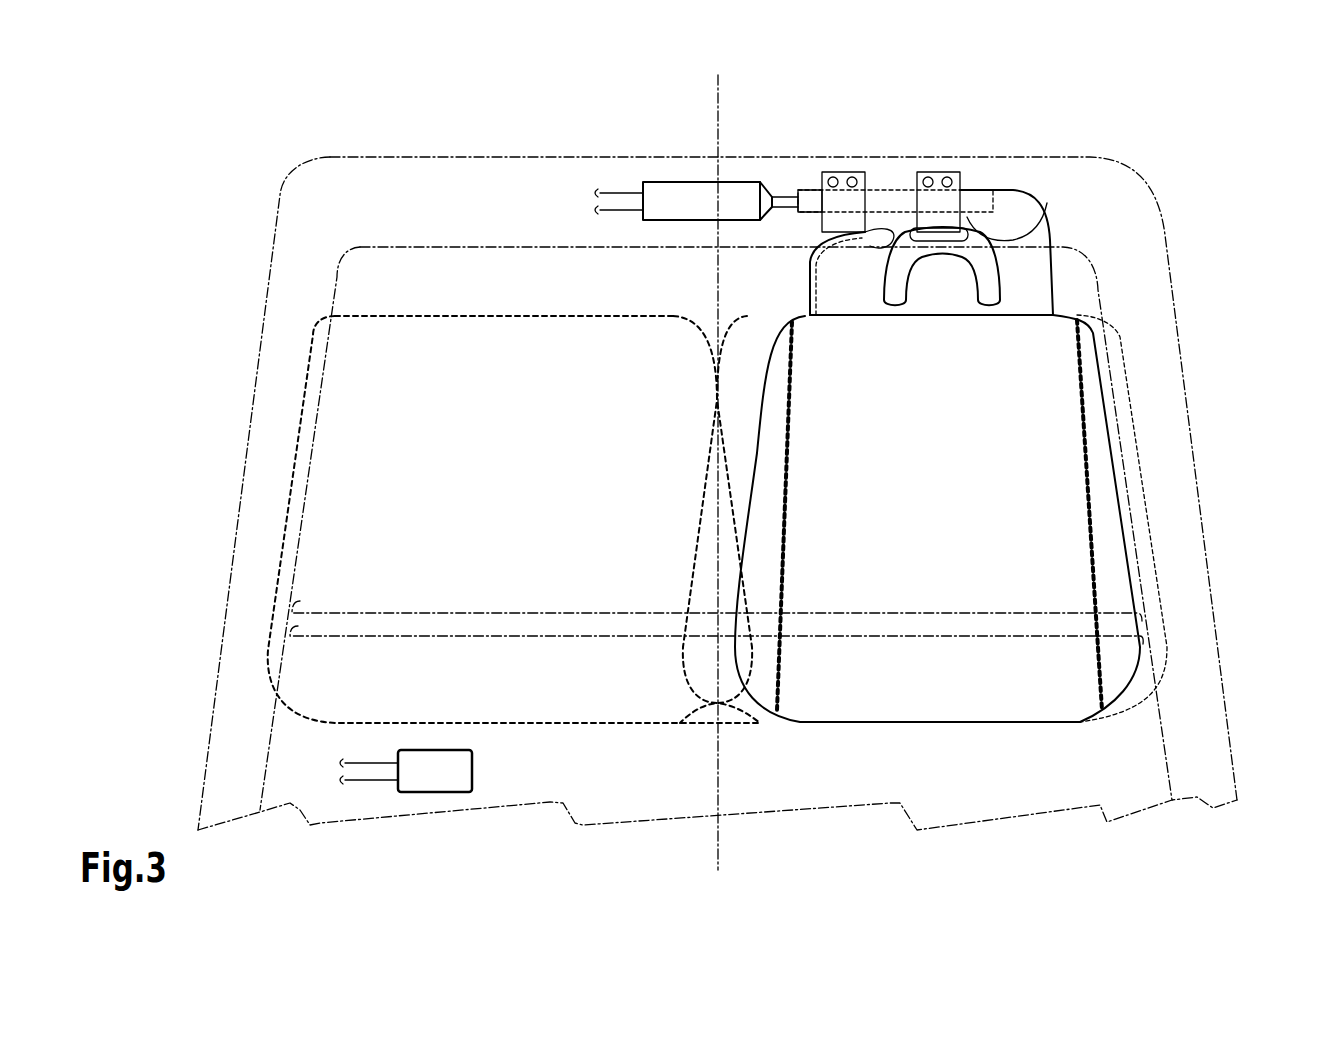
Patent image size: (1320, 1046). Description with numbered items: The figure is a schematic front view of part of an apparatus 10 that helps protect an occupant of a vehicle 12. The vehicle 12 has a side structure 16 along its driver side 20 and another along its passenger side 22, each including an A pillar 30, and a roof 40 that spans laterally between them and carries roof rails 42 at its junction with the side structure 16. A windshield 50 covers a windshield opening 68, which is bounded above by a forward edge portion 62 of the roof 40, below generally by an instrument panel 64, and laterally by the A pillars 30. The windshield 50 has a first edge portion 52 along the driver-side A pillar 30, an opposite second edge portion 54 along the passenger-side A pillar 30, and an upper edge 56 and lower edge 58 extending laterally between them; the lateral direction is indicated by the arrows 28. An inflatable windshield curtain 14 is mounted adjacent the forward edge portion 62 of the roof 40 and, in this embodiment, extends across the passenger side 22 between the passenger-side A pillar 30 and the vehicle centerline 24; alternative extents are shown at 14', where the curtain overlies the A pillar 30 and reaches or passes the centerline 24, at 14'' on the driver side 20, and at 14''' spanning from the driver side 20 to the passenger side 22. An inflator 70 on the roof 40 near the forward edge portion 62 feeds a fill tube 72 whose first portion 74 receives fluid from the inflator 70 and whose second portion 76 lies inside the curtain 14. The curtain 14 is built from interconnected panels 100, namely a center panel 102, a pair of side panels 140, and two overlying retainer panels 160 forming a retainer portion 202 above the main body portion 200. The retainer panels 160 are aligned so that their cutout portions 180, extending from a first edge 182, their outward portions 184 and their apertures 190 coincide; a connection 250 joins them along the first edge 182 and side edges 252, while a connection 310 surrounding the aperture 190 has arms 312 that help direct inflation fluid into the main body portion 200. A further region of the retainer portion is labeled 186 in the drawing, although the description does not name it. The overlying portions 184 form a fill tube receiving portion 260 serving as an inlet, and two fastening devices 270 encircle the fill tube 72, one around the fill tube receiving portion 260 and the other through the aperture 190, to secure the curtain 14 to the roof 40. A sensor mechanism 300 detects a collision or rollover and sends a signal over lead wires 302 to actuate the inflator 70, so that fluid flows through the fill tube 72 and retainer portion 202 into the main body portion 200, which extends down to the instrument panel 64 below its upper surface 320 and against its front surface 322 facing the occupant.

The apparatus 10 is at (965, 95).
The vehicle 12 is at (410, 120).
The inflatable windshield curtain 14 is at (881, 518).
The windshield curtain alternative extent 14' is at (687, 519).
The windshield curtain alternative position 14'' is at (514, 519).
The windshield curtain alternative extent 14''' is at (675, 793).
The side structure 16 is at (280, 363).
The driver side 20 is at (540, 753).
The passenger side 22 is at (1000, 760).
The vehicle centerline 24 is at (720, 840).
The lateral direction arrows 28 is at (952, 770).
The A pillar 30 is at (303, 293).
The roof 40 is at (557, 190).
The roof rails 42 is at (335, 205).
The windshield 50 is at (453, 303).
The first edge portion 52 is at (330, 517).
The second edge portion 54 is at (1107, 453).
The upper edge 56 is at (483, 247).
The lower edge 58 is at (540, 613).
The forward edge portion 62 is at (560, 230).
The instrument panel 64 is at (397, 670).
The windshield opening 68 is at (530, 287).
The inflator 70 is at (673, 183).
The fill tube 72 is at (788, 190).
The first portion of fill tube 74 is at (773, 190).
The second portion of fill tube 76 is at (893, 187).
The panels 100 is at (1020, 218).
The center panel 102 is at (1035, 585).
The side panels 140 is at (1113, 530).
The retainer panel 160 is at (1035, 295).
The cutout portion 180 is at (877, 223).
The first edge 182 is at (810, 293).
The outward extending portion 184 is at (810, 207).
The latch housing cover 186 is at (993, 193).
The aperture 190 is at (1022, 267).
The main body portion 200 is at (837, 567).
The retainer portion 202 is at (1057, 242).
The connection 250 is at (1052, 263).
The side edges 252 is at (1053, 287).
The fill tube receiving portion 260 is at (820, 167).
The fastening devices 270 is at (943, 170).
The sensor mechanism 300 is at (432, 773).
The lead wires 302 is at (620, 190).
The connection 310 is at (963, 257).
The arms 312 is at (893, 300).
The upper surface 320 is at (950, 633).
The front surface 322 is at (893, 673).